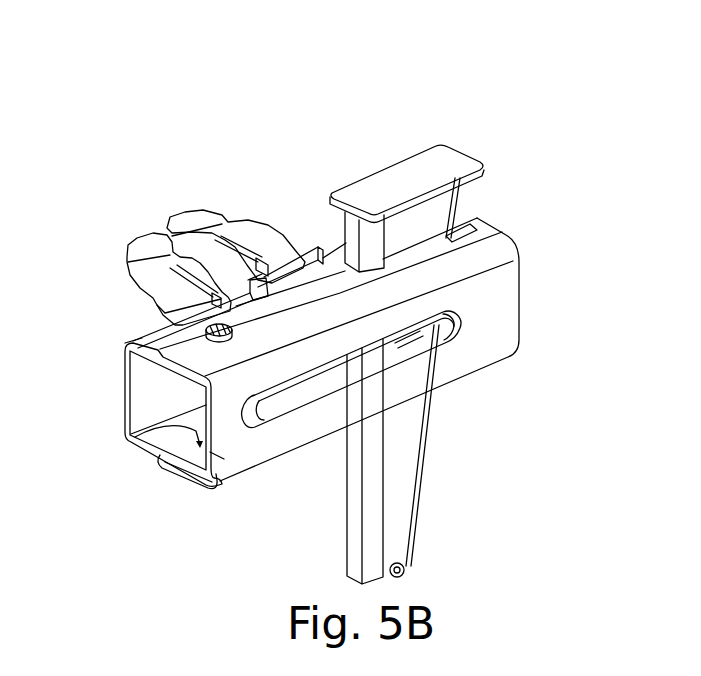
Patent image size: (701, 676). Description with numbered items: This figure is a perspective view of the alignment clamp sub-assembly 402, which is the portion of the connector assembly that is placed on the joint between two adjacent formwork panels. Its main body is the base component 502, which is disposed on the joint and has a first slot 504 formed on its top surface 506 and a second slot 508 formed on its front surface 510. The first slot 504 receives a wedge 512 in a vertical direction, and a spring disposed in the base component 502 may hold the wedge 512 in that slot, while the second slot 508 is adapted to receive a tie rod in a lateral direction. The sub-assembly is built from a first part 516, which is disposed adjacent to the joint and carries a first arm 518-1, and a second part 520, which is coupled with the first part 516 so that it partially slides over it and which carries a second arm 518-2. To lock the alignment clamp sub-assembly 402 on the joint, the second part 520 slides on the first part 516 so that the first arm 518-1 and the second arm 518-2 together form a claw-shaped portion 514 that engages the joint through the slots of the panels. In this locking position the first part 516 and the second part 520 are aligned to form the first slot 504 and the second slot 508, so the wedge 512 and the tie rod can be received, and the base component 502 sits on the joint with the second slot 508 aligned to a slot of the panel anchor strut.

The alignment clamp sub-assembly 402 is at (283, 93).
The base component 502 is at (208, 125).
The first slot 504 is at (460, 230).
The top surface 506 is at (326, 258).
The second slot 508 is at (432, 356).
The front surface 510 is at (505, 318).
The wedge 512 is at (399, 163).
The claw-shaped portion 514 is at (177, 127).
The first part 516 is at (142, 321).
The first arm 518-1 is at (152, 248).
The second arm 518-2 is at (197, 220).
The second part 520 is at (125, 436).